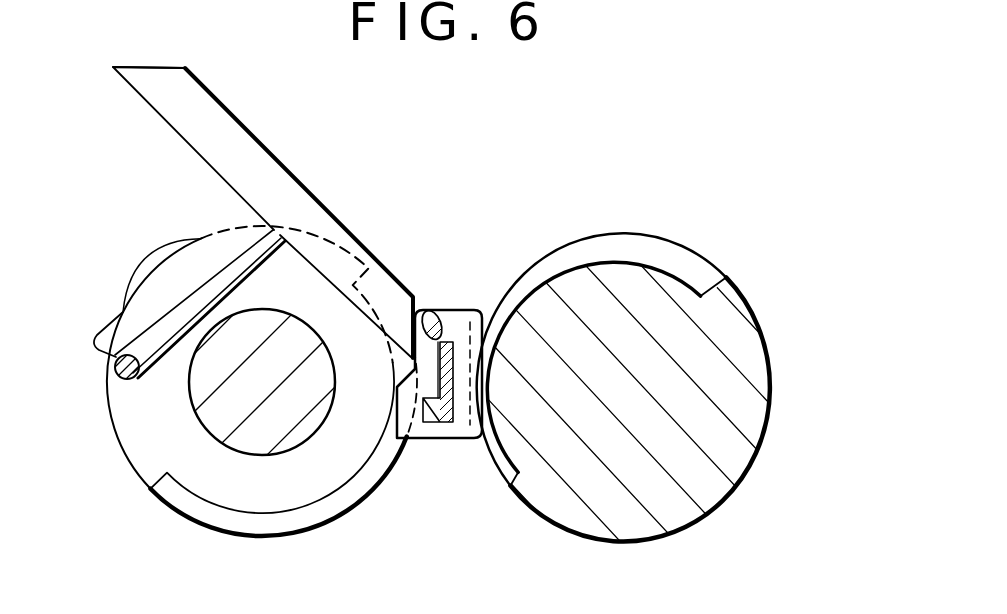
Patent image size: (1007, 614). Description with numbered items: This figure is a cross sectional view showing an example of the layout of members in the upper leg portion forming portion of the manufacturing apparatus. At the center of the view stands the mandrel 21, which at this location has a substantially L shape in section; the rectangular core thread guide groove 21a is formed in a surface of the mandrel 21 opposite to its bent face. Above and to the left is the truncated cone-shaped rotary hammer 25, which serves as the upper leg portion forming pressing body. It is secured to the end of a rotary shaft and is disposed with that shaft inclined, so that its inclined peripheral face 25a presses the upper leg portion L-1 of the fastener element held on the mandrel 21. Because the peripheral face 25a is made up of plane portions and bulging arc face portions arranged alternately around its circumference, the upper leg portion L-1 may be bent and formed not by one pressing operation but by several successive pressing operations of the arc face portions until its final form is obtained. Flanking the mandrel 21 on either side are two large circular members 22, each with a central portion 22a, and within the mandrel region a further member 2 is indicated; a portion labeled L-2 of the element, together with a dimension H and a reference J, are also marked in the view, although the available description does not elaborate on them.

The sealing member 2 is at (440, 378).
The mandrel 21 is at (451, 384).
The core thread guide groove 21a is at (415, 368).
The roller 22 is at (770, 381).
The roller shaft 22a is at (228, 413).
The rotary hammer 25 is at (163, 118).
The inclined peripheral face 25a is at (141, 67).
The upper leg portion L-1 is at (390, 433).
The length L-2 is at (477, 402).
The height H is at (447, 421).
The gap J is at (457, 240).